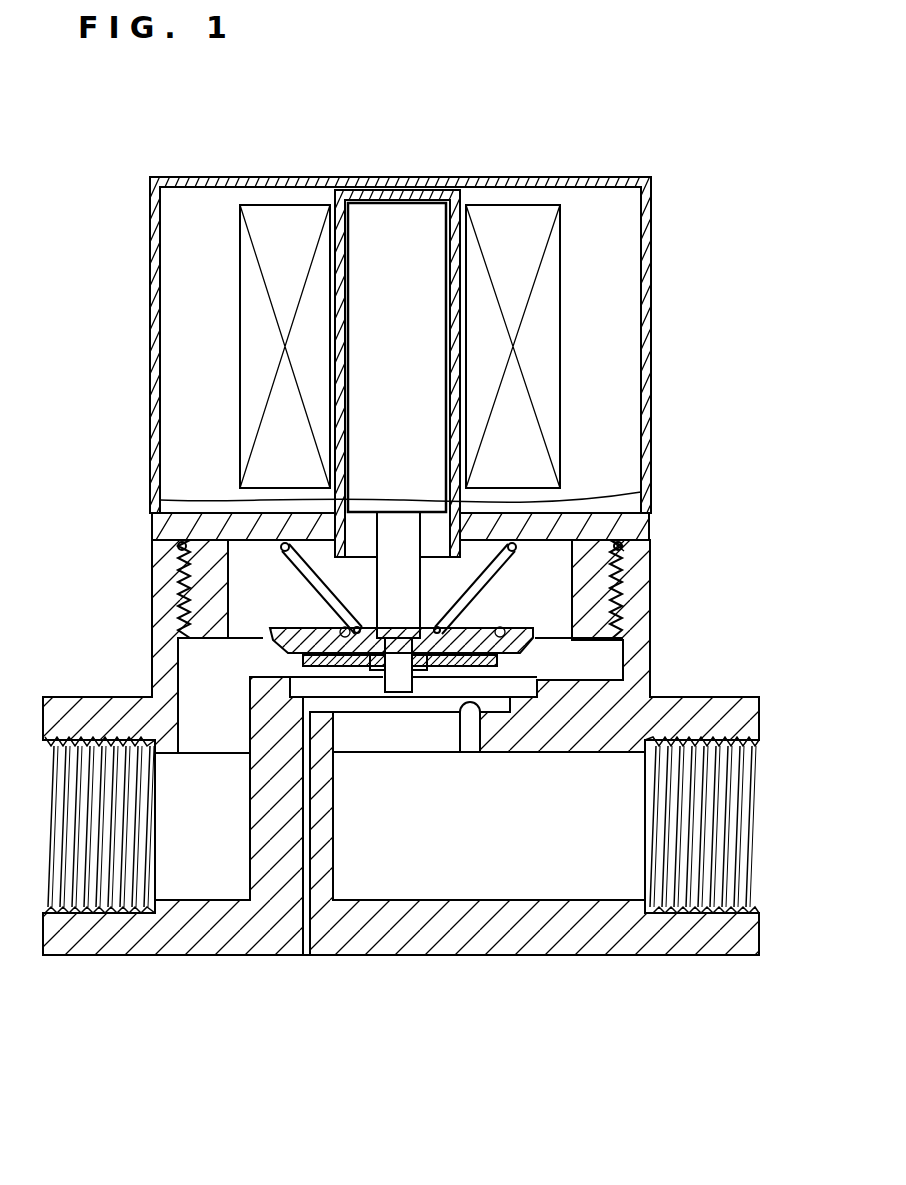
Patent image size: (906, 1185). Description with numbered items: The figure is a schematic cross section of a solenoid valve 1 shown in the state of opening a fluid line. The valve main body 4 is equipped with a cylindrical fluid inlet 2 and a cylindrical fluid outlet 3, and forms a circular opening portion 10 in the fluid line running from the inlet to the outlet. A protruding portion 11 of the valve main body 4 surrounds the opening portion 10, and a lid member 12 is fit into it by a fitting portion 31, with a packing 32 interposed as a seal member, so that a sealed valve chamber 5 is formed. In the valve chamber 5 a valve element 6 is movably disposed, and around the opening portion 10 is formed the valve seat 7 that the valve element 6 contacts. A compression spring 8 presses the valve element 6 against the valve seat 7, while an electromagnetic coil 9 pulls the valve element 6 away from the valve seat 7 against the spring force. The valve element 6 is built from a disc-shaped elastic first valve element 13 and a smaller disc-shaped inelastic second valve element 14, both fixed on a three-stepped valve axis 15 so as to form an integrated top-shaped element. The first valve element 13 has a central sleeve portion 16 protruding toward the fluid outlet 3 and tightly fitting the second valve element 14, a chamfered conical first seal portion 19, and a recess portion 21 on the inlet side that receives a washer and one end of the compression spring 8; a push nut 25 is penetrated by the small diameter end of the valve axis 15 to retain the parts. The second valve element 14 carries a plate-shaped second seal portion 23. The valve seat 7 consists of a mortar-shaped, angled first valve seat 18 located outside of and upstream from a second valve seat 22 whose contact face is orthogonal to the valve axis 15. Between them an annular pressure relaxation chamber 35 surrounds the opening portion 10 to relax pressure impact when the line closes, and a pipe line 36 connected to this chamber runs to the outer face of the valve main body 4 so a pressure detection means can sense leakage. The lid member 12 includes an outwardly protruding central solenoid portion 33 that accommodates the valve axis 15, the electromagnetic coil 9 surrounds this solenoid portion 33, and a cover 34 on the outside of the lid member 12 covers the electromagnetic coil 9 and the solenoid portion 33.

The solenoid valve 1 is at (395, 114).
The fluid inlet 2 is at (222, 870).
The fluid outlet 3 is at (607, 872).
The valve main body 4 is at (65, 700).
The valve chamber 5 is at (235, 586).
The valve element 6 is at (249, 632).
The valve seat 7 is at (236, 695).
The compression spring 8 is at (255, 588).
The electromagnetic coil 9 is at (285, 205).
The opening portion 10 is at (405, 720).
The protruding portion 11 is at (640, 630).
The lid member 12 is at (160, 528).
The first valve element 13 is at (522, 632).
The second valve element 14 is at (500, 662).
The valve axis 15 is at (418, 215).
The sleeve portion 16 is at (378, 680).
The first valve seat 18 is at (520, 697).
The first seal portion 19 is at (300, 640).
The recess portion 21 is at (284, 545).
The second valve seat 22 is at (470, 712).
The second seal portion 23 is at (335, 697).
The push nut 25 is at (432, 700).
The fitting portion 31 is at (600, 597).
The packing 32 is at (623, 546).
The solenoid portion 33 is at (641, 492).
The cover 34 is at (214, 177).
The pressure relaxation chamber 35 is at (490, 700).
The pipe line 36 is at (307, 958).